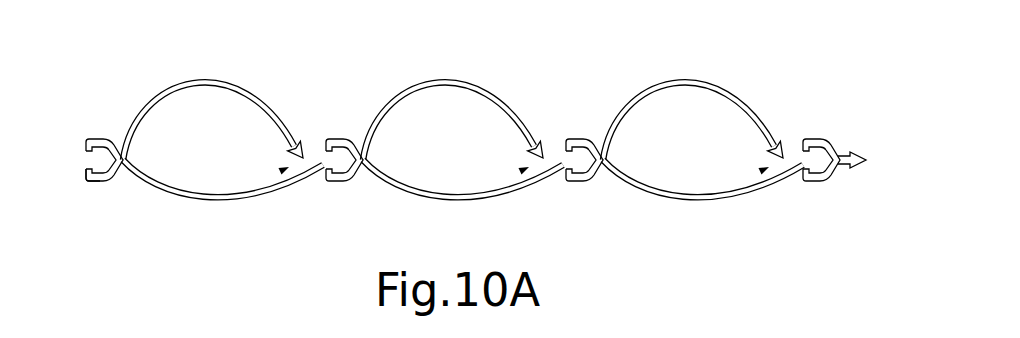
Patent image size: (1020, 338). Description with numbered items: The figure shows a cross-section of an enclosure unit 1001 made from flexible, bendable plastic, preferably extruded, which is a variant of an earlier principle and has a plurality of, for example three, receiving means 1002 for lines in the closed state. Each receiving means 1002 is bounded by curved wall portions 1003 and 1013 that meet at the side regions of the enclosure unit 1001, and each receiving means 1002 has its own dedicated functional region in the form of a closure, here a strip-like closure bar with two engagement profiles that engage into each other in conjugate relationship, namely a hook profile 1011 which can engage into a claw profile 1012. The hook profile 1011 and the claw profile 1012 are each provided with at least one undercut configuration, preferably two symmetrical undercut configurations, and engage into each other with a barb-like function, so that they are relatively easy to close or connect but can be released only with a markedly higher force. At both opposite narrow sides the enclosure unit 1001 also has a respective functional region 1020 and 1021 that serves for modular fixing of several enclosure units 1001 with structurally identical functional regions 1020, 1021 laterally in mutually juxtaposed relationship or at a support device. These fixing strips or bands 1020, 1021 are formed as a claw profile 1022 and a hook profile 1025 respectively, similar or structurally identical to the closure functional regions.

The enclosure unit 1001 is at (741, 34).
The receiving means 1002 is at (236, 156).
The upper strut 1003 is at (212, 83).
The hook profile 1011 is at (290, 136).
The claw profile 1012 is at (343, 138).
The lower strut 1013 is at (276, 172).
The functional region 1020 is at (96, 130).
The functional region 1021 is at (849, 182).
The claw profile 1022 is at (90, 173).
The hook profile 1025 is at (874, 150).